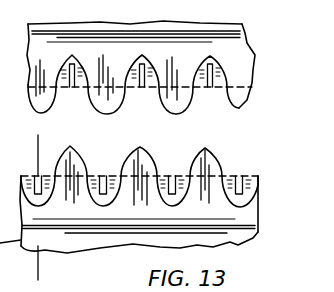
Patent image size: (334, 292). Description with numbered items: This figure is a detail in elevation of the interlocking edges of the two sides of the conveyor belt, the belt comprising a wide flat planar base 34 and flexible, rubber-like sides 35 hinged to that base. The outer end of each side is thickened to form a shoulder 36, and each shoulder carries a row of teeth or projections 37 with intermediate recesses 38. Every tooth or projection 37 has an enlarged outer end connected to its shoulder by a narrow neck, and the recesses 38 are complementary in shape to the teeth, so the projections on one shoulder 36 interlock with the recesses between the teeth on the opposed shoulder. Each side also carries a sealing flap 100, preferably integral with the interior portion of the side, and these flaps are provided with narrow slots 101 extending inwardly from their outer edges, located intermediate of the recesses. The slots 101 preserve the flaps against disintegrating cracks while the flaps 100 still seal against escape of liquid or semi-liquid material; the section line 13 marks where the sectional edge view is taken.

The section line 13- 13 is at (38, 135).
The base 34 is at (53, 1).
The sides 35 is at (196, 23).
The shoulders 36 is at (136, 36).
The teeth or projections 37 is at (113, 104).
The recesses 38 is at (77, 87).
The sealing flap 100 is at (216, 88).
The narrow slots 101 is at (75, 62).